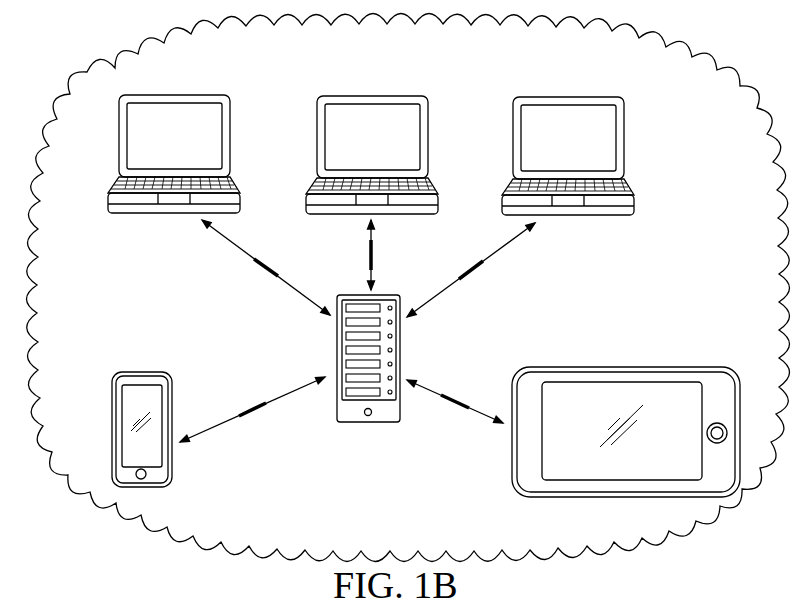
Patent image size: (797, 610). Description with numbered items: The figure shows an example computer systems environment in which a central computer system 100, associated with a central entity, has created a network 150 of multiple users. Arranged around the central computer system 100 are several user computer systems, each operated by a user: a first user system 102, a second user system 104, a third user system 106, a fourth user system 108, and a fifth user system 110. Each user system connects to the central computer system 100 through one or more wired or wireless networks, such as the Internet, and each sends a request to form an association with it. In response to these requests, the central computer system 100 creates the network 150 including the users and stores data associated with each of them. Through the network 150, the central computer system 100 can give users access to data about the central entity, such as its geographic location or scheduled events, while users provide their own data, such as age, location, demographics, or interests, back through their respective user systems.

The network 150 is at (82, 63).
The first user system 102 is at (173, 94).
The fourth user system 108 is at (370, 96).
The second user system 104 is at (566, 97).
The central computer system 100 is at (337, 360).
The third user system 106 is at (626, 366).
The fifth user system 110 is at (112, 427).